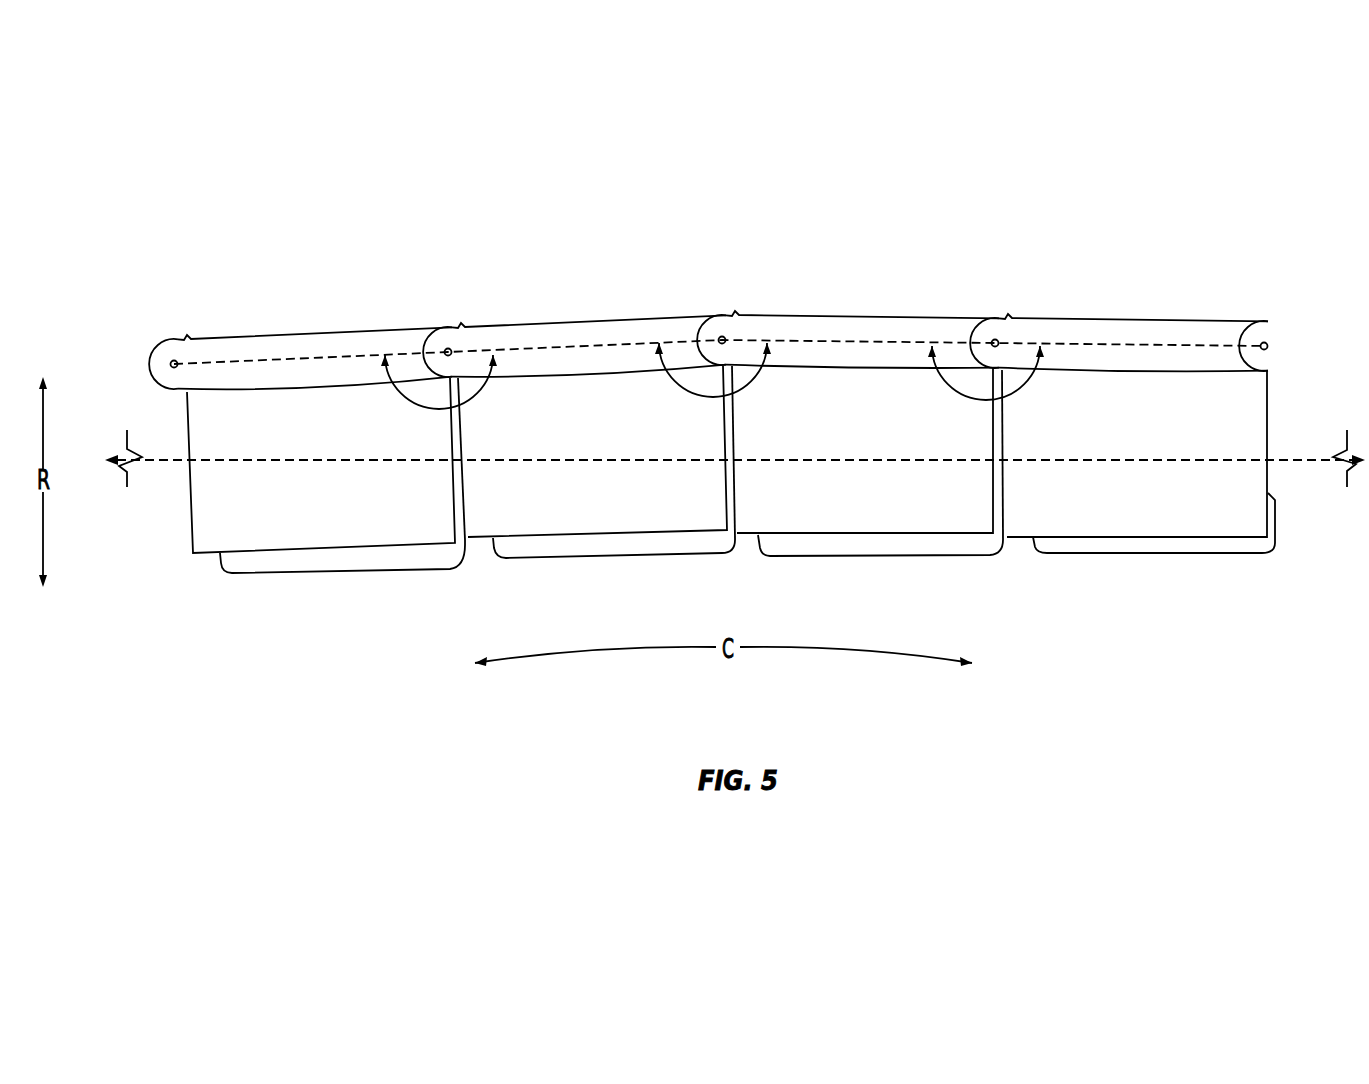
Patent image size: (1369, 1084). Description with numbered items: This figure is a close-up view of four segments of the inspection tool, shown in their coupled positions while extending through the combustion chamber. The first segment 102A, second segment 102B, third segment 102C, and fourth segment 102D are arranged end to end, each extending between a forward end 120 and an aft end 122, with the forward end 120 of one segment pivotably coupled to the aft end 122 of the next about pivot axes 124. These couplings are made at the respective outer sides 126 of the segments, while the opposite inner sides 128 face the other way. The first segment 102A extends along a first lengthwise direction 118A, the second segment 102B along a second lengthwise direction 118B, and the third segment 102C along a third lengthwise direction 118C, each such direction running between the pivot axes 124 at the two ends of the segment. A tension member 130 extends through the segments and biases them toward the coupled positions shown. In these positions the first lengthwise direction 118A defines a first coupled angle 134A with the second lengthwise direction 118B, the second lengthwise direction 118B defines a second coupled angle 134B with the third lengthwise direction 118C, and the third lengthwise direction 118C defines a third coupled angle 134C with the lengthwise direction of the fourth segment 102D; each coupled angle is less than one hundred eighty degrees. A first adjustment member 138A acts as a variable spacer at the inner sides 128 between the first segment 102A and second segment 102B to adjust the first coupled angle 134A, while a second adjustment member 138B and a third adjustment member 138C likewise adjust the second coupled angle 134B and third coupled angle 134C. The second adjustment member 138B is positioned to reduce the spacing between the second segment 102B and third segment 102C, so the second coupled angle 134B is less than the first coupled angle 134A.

The first segment 102A is at (347, 507).
The second segment 102B is at (617, 507).
The third segment 102C is at (893, 507).
The fourth segment 102D is at (1163, 507).
The first lengthwise direction 118A is at (293, 355).
The second lengthwise direction 118B is at (584, 347).
The third lengthwise direction 118C is at (857, 345).
The forward end 120 is at (465, 443).
The aft end 122 is at (450, 423).
The pivot axes 124 is at (172, 362).
The outer side 126 is at (822, 307).
The inner side 128 is at (320, 606).
The tension member 130 is at (170, 460).
The first coupled angle 134A is at (493, 377).
The second coupled angle 134B is at (769, 364).
The third coupled angle 134C is at (1043, 372).
The first adjustment member 138A is at (402, 569).
The second adjustment member 138B is at (642, 559).
The third adjustment member 138C is at (928, 558).